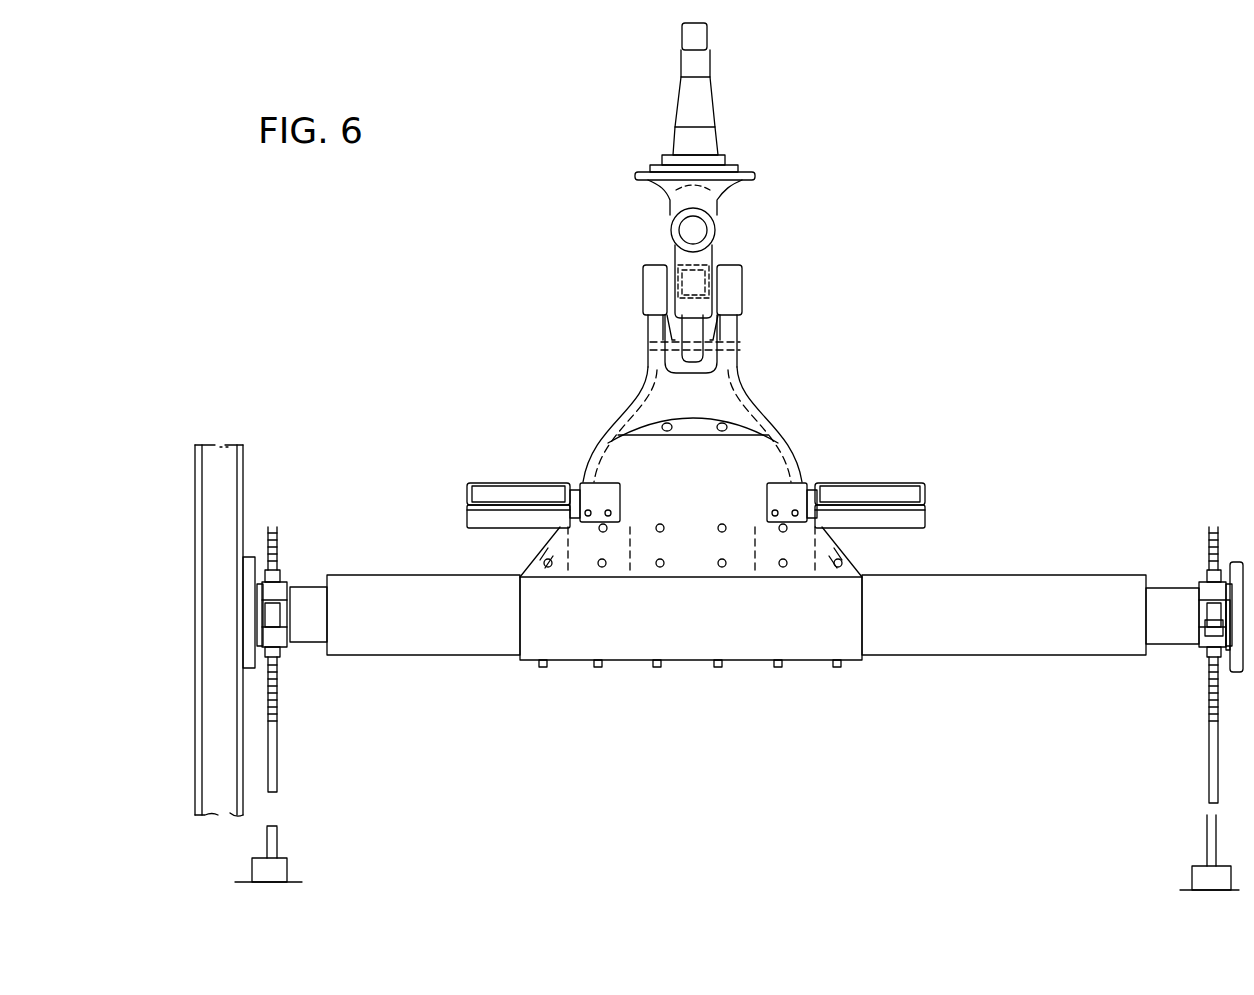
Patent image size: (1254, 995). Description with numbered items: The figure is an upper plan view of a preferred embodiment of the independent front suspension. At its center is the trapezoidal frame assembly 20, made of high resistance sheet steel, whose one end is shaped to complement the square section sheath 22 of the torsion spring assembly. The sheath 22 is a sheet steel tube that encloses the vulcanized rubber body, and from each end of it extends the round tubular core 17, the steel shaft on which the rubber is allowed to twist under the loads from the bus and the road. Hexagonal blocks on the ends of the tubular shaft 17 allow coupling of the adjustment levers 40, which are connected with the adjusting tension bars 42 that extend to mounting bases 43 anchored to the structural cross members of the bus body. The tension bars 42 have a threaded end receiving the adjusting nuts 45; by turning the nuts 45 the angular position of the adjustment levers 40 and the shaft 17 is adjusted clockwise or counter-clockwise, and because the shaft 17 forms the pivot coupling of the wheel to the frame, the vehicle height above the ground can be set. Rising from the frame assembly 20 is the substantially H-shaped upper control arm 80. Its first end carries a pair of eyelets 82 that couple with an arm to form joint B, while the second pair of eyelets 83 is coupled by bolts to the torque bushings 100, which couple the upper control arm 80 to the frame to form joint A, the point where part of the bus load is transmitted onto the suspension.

The tubular core 17 is at (310, 646).
The frame assembly 20 is at (848, 545).
The square section sheath 22 is at (1000, 642).
The adjustment lever 40 is at (1196, 640).
The tension bar 42 is at (282, 530).
The mounting base 43 is at (290, 868).
The adjusting nut 45 is at (284, 580).
The upper control arm 80 is at (710, 392).
The eyelets 82 is at (641, 296).
The eyelets 83 is at (622, 497).
The torque bushing 100 is at (465, 500).